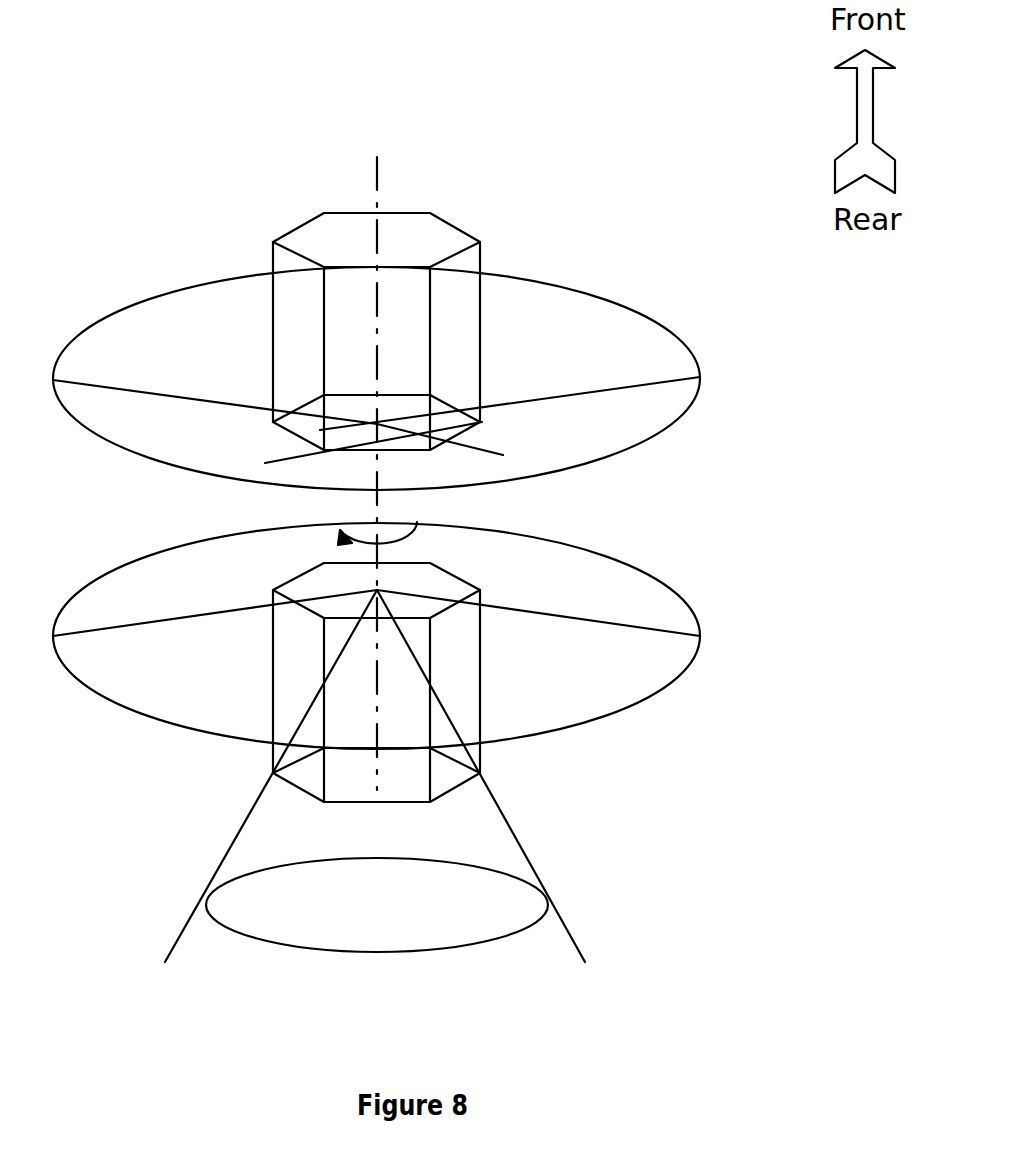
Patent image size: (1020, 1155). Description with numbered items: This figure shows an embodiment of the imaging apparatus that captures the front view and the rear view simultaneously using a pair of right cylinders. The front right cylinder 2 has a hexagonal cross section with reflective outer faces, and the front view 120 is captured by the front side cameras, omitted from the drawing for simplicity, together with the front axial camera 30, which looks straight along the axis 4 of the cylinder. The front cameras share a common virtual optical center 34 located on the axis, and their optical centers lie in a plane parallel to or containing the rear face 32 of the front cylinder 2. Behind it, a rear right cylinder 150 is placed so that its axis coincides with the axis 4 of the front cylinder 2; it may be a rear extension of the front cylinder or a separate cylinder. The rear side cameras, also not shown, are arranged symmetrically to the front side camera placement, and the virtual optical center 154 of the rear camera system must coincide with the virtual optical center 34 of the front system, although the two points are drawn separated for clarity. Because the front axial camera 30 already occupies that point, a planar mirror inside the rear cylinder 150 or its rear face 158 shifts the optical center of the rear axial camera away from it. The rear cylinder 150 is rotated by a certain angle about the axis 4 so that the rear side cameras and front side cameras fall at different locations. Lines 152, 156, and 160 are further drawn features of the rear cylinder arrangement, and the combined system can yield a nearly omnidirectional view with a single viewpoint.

The right cylinder 2 is at (432, 233).
The axis 4 is at (377, 178).
The front axial camera 30 is at (359, 444).
The rear face 32 is at (305, 427).
The virtual optical center 34 is at (302, 422).
The front view 120 is at (82, 328).
The rear right cylinder 150 is at (327, 583).
The lower disk plane 152 is at (700, 636).
The virtual optical center 154 is at (377, 590).
The radial lines to cone apex 156 is at (377, 590).
The rear face 158 is at (442, 780).
The base ellipse of cone 160 is at (477, 866).